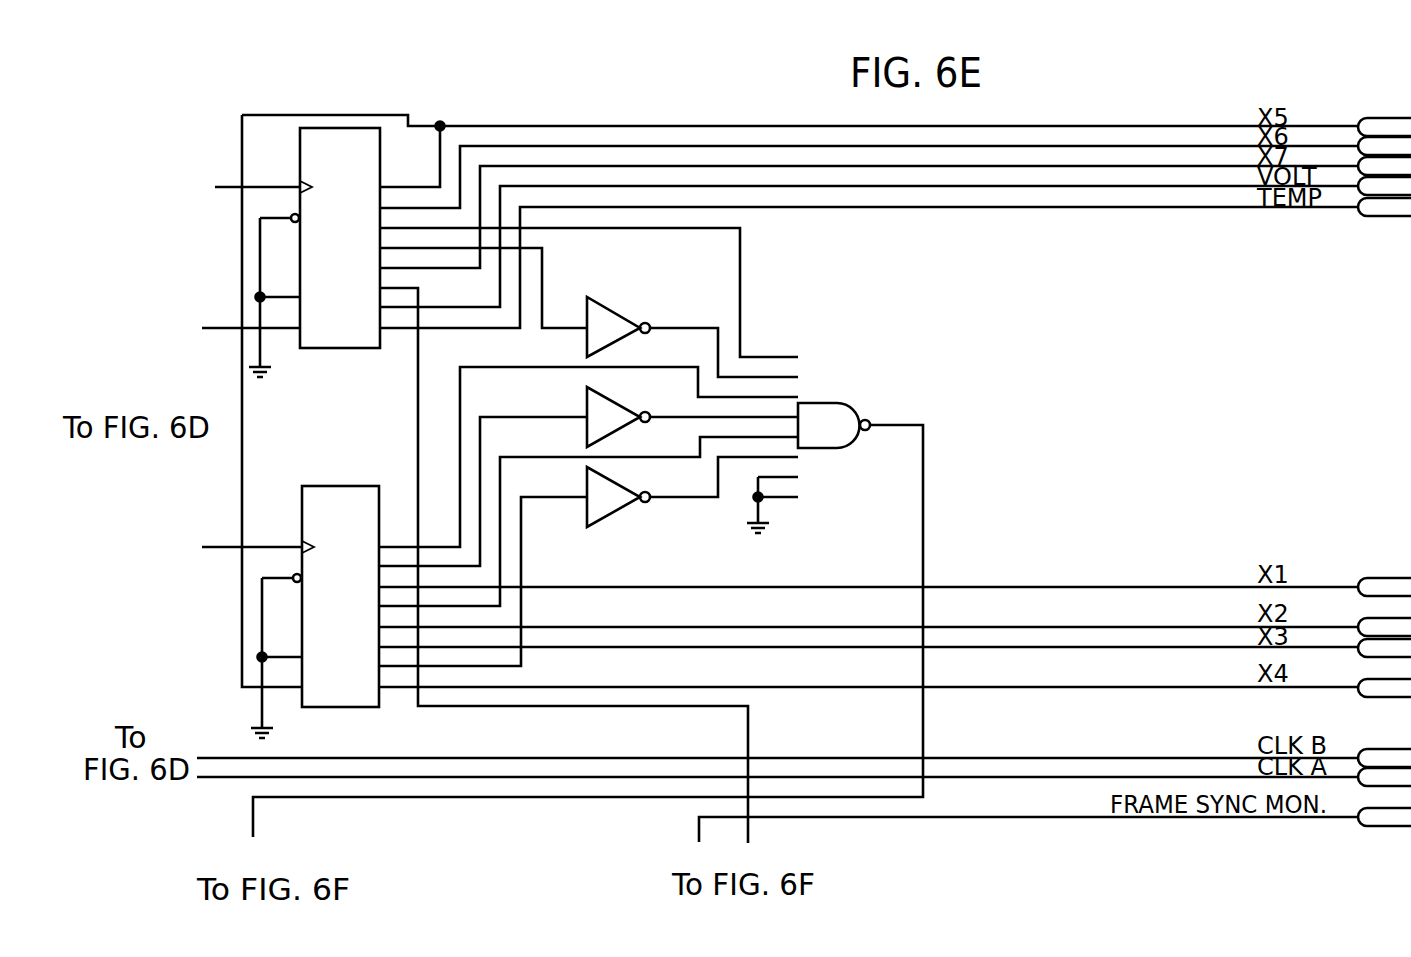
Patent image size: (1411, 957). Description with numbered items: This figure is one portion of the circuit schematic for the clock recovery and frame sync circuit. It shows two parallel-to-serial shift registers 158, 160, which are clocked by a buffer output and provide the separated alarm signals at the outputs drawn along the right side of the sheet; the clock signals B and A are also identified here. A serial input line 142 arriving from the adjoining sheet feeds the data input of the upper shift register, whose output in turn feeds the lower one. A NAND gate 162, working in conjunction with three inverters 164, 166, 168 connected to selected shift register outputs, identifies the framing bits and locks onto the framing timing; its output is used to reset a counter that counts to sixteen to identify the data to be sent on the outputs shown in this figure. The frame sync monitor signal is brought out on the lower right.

The serial data input line from FIG. 6D 142 is at (210, 328).
The parallel-to-serial shift register 158 is at (350, 348).
The parallel-to-serial shift register 160 is at (343, 486).
The NAND gate 162 is at (842, 452).
The inverter 164 is at (606, 306).
The inverter 166 is at (608, 400).
The inverter 168 is at (598, 528).